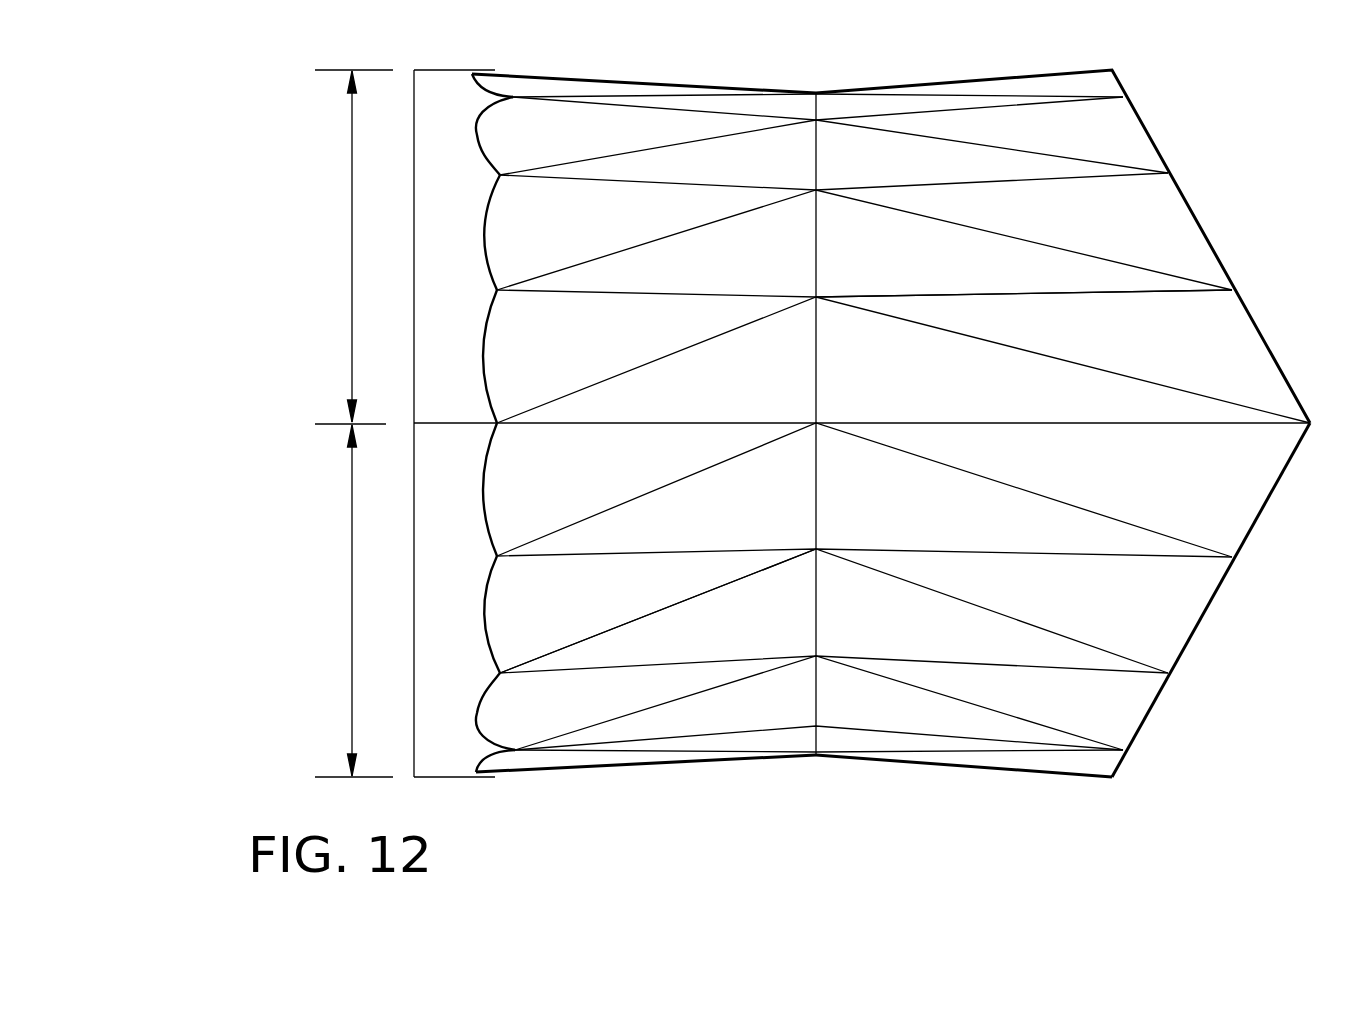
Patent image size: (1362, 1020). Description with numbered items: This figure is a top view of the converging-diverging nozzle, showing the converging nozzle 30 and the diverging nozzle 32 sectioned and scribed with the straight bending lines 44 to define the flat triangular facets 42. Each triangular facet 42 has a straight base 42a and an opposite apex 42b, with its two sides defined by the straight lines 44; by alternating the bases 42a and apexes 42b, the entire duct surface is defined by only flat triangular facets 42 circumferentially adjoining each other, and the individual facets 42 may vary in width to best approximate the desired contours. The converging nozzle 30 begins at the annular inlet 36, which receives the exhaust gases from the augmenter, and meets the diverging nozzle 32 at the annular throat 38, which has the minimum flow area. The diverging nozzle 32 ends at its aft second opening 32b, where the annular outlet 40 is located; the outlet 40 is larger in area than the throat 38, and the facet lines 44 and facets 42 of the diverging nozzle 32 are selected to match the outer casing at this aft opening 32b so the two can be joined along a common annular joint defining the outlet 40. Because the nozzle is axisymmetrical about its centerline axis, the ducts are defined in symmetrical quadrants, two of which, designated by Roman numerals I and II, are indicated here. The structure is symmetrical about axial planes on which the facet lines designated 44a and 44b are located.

The first quadrant I is at (352, 207).
The second quadrant II is at (352, 519).
The converging nozzle 30 is at (648, 790).
The diverging nozzle 32 is at (1022, 785).
The second opening 32b is at (1150, 720).
The annular inlet 36 is at (385, 594).
The annular throat 38 is at (818, 785).
The annular outlet 40 is at (1215, 628).
The triangular facets 42 is at (903, 423).
The straight base 42a is at (483, 492).
The apex 42b is at (497, 283).
The straight lines 44 is at (1058, 293).
The facet lines 44a is at (678, 422).
The facet lines 44b is at (1068, 68).